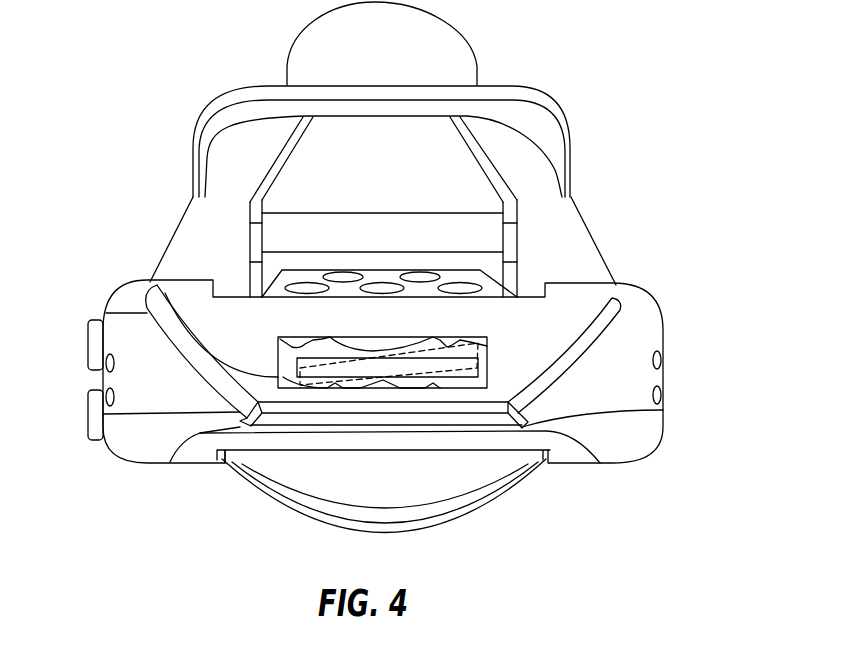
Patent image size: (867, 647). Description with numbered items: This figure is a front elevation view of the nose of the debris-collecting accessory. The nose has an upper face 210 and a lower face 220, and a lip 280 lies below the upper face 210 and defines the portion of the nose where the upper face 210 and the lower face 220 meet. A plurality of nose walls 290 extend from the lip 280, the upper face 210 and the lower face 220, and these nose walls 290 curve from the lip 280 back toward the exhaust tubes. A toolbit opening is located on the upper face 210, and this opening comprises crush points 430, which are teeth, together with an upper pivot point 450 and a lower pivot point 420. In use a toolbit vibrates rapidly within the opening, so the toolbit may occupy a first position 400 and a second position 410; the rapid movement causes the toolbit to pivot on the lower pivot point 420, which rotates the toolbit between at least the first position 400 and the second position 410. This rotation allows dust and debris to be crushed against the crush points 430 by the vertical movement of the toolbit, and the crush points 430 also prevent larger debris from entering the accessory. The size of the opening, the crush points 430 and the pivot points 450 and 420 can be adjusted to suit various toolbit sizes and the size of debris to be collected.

The upper face 210 is at (557, 335).
The lower face 220 is at (382, 433).
The lip 280 is at (405, 413).
The nose walls 290 is at (603, 387).
The first position 400 is at (485, 362).
The second position 410 is at (153, 290).
The lower pivot point 420 is at (382, 383).
The crush points 430 is at (310, 347).
The upper pivot point 450 is at (395, 335).